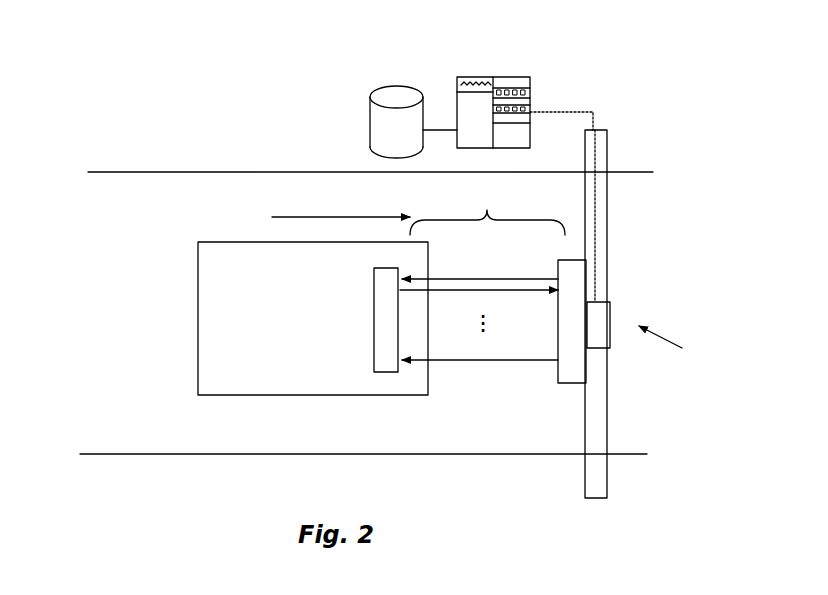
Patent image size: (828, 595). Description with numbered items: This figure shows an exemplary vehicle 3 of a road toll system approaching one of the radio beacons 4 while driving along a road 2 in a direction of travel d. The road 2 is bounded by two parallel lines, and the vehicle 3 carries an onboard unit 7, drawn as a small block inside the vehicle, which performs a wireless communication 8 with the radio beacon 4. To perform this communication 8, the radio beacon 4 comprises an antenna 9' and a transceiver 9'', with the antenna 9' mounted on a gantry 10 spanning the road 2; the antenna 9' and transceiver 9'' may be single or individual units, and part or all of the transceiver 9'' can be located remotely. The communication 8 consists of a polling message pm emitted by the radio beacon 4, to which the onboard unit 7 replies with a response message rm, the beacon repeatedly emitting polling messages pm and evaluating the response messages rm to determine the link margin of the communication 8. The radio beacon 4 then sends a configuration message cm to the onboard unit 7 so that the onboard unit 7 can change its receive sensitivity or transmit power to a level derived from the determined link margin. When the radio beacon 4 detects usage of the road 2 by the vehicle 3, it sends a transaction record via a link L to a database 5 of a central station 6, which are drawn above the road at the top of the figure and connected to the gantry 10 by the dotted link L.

The road 2 is at (233, 172).
The vehicle 3 is at (198, 300).
The radio beacon 4 is at (678, 352).
The database 5 is at (392, 85).
The central station 6 is at (482, 76).
The onboard unit 7 is at (373, 278).
The wireless communication 8 is at (487, 209).
The antenna 9' is at (613, 344).
The transceiver 9'' is at (567, 348).
The gantry 10 is at (606, 263).
The link L is at (552, 111).
The direction of travel d is at (340, 216).
The polling message pm is at (492, 278).
The response message rm is at (500, 291).
The configuration message cm is at (480, 364).